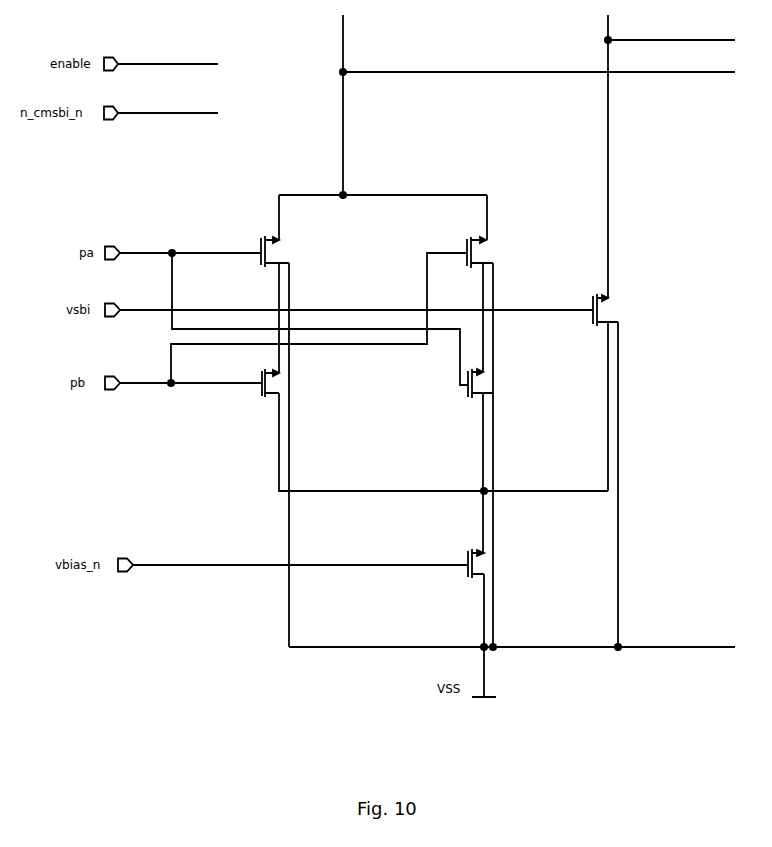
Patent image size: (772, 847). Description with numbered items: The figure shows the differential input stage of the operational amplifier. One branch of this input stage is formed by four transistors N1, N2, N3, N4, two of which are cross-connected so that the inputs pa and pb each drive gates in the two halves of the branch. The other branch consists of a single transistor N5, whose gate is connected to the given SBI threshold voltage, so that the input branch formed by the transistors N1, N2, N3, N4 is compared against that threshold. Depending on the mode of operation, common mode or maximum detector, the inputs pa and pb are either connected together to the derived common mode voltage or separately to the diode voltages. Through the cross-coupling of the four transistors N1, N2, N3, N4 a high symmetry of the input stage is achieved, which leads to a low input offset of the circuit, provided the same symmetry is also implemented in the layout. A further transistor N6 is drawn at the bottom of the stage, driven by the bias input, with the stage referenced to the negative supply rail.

The transistor N1 is at (287, 251).
The transistor N2 is at (500, 252).
The transistor N3 is at (295, 383).
The transistor N4 is at (498, 383).
The transistor N5 is at (625, 310).
The transistor N6 is at (498, 563).